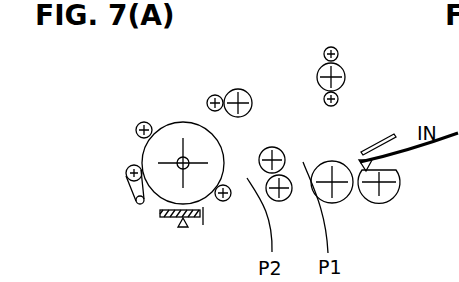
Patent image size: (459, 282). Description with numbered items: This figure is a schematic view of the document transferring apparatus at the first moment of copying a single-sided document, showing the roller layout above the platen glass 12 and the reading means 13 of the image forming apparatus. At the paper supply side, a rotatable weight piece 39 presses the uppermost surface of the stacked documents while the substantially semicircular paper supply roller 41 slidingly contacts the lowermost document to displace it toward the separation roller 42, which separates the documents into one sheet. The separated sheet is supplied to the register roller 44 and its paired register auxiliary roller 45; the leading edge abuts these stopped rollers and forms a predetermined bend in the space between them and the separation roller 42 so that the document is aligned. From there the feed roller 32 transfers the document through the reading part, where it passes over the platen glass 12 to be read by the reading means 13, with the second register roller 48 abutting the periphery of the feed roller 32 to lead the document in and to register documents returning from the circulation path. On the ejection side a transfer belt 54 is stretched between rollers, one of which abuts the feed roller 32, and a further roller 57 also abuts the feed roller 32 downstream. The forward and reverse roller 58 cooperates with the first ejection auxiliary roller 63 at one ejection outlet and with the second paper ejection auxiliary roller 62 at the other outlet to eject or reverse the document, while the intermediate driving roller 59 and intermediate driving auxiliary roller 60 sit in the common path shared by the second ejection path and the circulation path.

The platen glass 12 is at (160, 218).
The reading means 13 is at (185, 229).
The feed roller 32 is at (179, 133).
The rotatable weight piece 39 is at (395, 134).
The paper supply roller 41 is at (393, 195).
The separation roller 42 is at (340, 202).
The register roller 44 is at (272, 147).
The register auxiliary roller 45 is at (285, 201).
The second register roller 48 is at (230, 199).
The transfer belt 54 is at (126, 186).
The roller 57 is at (143, 122).
The forward and reverse roller 58 is at (346, 77).
The intermediate driving roller 59 is at (246, 92).
The intermediate driving auxiliary roller 60 is at (212, 95).
The second paper ejection auxiliary roller 62 is at (331, 107).
The first ejection auxiliary roller 63 is at (339, 53).